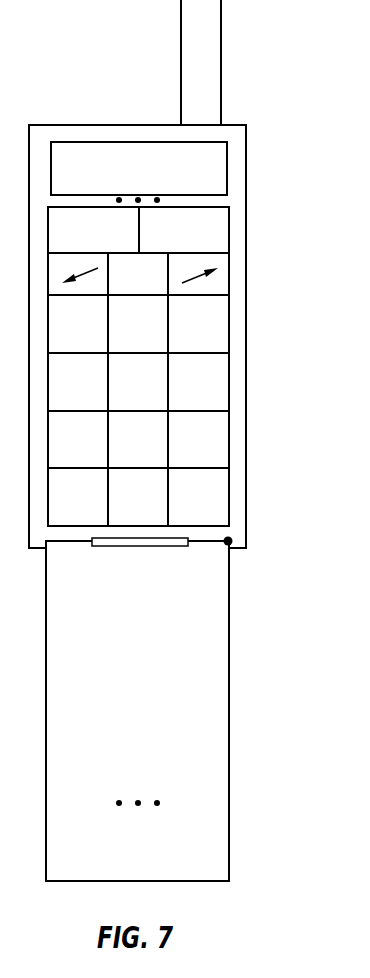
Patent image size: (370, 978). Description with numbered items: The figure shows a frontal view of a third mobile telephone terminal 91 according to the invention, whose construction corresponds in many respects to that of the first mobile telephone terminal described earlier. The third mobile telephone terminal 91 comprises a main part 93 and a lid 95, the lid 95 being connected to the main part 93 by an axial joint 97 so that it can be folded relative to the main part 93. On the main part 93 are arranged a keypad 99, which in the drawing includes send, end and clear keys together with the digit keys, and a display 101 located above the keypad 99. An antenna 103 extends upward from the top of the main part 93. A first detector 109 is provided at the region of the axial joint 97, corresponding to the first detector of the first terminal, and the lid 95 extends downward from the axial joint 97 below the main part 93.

The third mobile telephone terminal 91 is at (171, 440).
The main part 93 is at (246, 128).
The lid 95 is at (229, 780).
The axial joint 97 is at (133, 548).
The keypad 99 is at (229, 420).
The display 101 is at (227, 165).
The antenna 103 is at (221, 17).
The first detector 109 is at (232, 541).